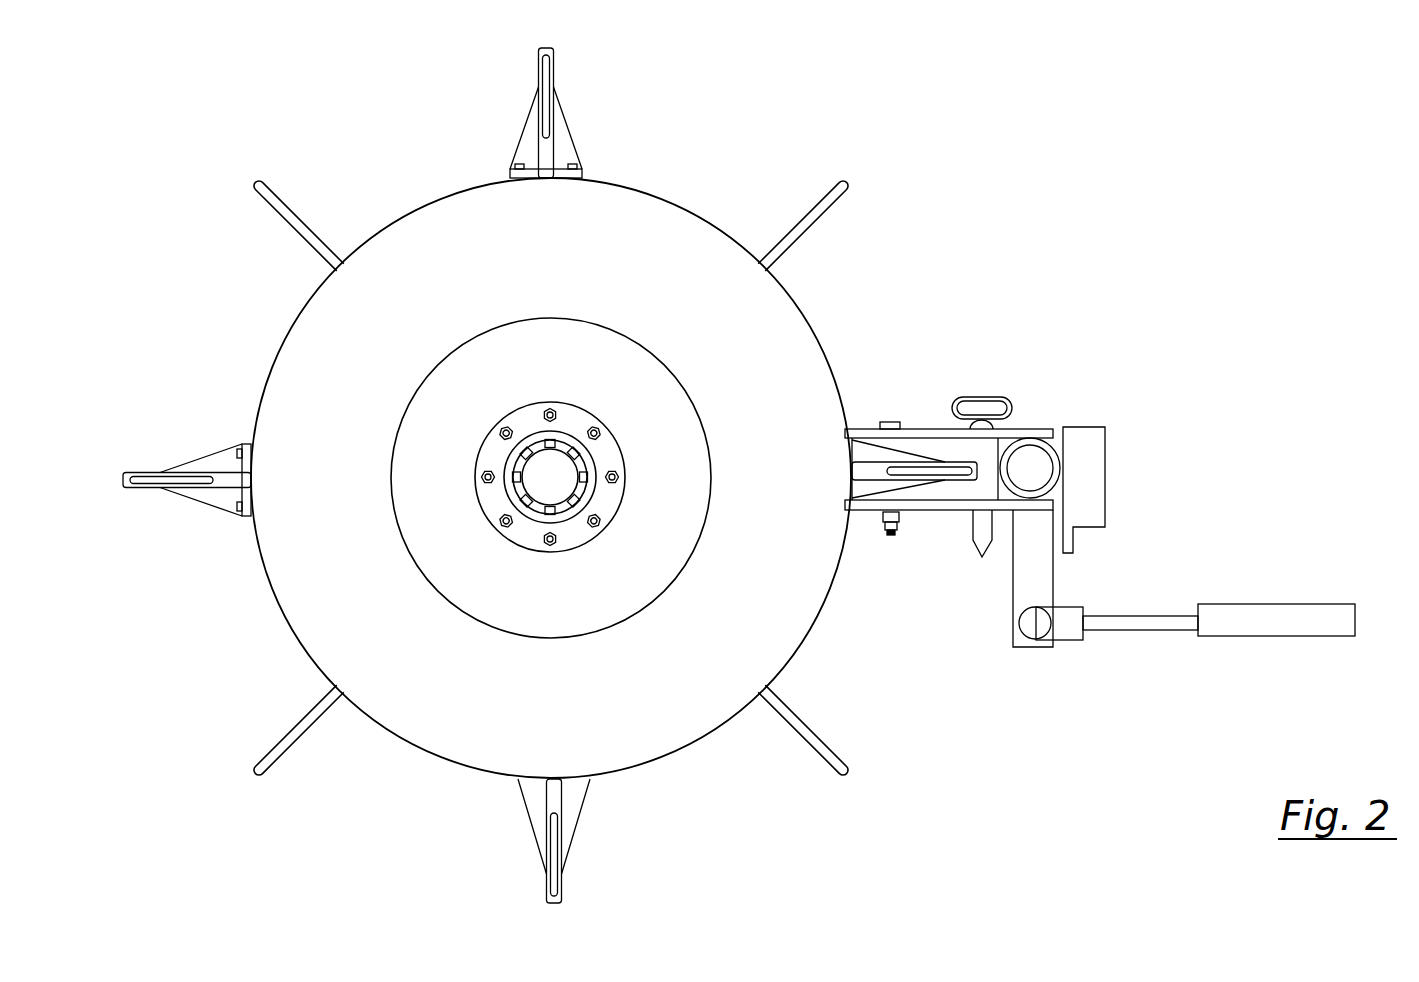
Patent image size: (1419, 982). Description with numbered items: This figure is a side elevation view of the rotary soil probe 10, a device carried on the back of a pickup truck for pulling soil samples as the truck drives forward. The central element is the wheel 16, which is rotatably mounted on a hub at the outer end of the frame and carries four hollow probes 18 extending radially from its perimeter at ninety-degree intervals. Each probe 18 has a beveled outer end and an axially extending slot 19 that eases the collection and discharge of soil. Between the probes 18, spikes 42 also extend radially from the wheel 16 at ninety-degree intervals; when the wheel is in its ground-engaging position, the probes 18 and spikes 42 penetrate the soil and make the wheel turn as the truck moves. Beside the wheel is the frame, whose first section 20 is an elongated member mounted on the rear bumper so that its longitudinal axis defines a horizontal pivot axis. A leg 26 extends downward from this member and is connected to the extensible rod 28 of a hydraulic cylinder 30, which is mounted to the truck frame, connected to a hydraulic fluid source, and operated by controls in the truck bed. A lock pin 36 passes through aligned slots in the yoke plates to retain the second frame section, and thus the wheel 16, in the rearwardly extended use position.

The rotary soil probe 10 is at (952, 282).
The wheel 16 is at (650, 218).
The probes 18 is at (547, 162).
The axially extending slot 19 is at (541, 52).
The first frame section 20 is at (1031, 420).
The vertical post 26 is at (1013, 588).
The extensible rod 28 is at (1138, 616).
The hydraulic cylinder 30 is at (1277, 603).
The lock pin 36 is at (987, 397).
The spikes 42 is at (255, 182).